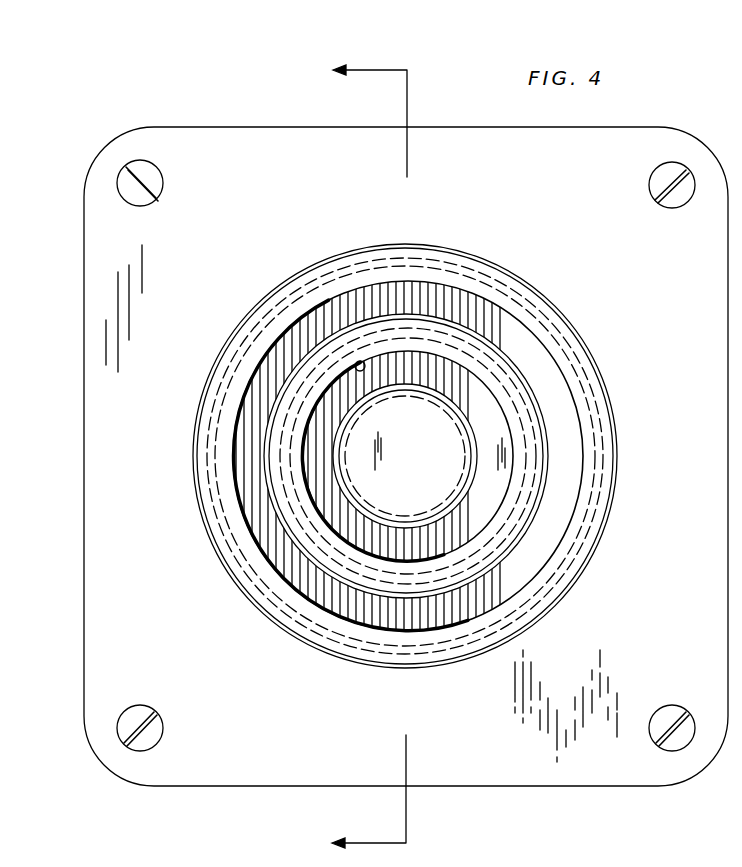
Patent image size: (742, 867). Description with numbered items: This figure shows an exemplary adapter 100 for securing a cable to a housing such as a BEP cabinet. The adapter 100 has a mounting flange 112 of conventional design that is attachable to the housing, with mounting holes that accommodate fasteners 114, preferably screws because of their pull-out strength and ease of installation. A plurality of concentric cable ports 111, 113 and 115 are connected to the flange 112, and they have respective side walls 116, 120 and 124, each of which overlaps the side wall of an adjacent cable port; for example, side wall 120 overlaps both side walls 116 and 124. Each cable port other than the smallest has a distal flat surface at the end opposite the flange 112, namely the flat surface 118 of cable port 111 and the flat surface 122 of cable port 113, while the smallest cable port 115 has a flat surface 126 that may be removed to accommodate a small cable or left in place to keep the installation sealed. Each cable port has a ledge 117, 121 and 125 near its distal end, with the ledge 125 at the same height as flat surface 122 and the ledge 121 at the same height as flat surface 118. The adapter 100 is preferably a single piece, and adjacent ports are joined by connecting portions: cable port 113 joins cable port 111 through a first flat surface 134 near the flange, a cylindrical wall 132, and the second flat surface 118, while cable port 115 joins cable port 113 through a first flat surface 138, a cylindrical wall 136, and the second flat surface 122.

The adapter 100 is at (458, 116).
The cable port 111 is at (298, 273).
The mounting flange 112 is at (272, 127).
The cable port 113 is at (553, 454).
The fasteners 114 is at (163, 183).
The cable port 115 is at (472, 500).
The side wall 116 is at (408, 243).
The ledge 117 is at (383, 243).
The distal flat surface 118 is at (496, 270).
The side wall 120 is at (290, 370).
The ledge 121 is at (282, 392).
The distal flat surface 122 is at (287, 417).
The side wall 124 is at (475, 425).
The ledge 125 is at (410, 384).
The flat surface 126 is at (392, 468).
The cylindrical wall 132 is at (287, 325).
The first flat surface 134 is at (245, 462).
The cylindrical wall 136 is at (357, 361).
The first flat surface 138 is at (327, 490).